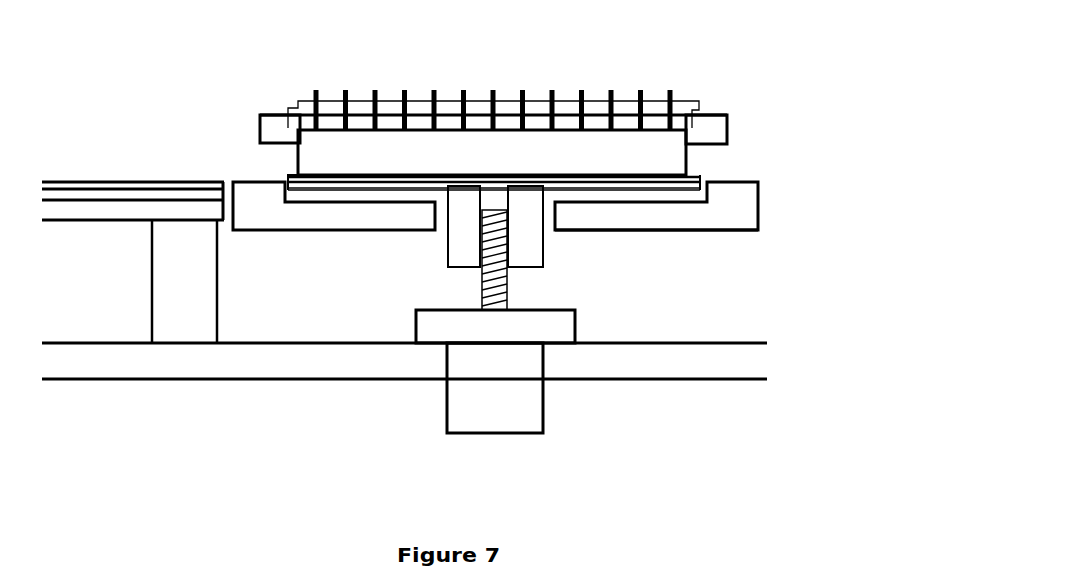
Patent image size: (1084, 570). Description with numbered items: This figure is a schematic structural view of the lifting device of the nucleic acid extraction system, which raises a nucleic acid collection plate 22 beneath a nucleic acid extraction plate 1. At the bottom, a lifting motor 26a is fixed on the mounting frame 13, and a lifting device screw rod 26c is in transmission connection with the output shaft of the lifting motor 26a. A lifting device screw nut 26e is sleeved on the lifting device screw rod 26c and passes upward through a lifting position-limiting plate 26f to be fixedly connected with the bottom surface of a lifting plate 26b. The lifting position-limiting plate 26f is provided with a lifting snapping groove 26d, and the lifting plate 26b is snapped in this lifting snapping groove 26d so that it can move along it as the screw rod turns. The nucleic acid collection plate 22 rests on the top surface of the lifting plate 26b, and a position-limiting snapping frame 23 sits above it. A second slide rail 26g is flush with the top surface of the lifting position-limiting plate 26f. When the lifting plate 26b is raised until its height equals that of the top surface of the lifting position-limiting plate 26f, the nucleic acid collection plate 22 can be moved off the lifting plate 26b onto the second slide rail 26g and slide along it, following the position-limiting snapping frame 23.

The nucleic acid extraction plate 1 is at (683, 122).
The nucleic acid collection plate 22 is at (290, 158).
The position-limiting snapping frame 23 is at (718, 113).
The lifting plate 26b is at (702, 170).
The second slide rail 26g is at (143, 182).
The lifting snapping groove 26d is at (708, 193).
The lifting position-limiting plate 26f is at (635, 231).
The lifting device screw nut 26e is at (543, 252).
The lifting device screw rod 26c is at (480, 305).
The mounting frame 13 is at (613, 360).
The lifting motor 26a is at (543, 410).